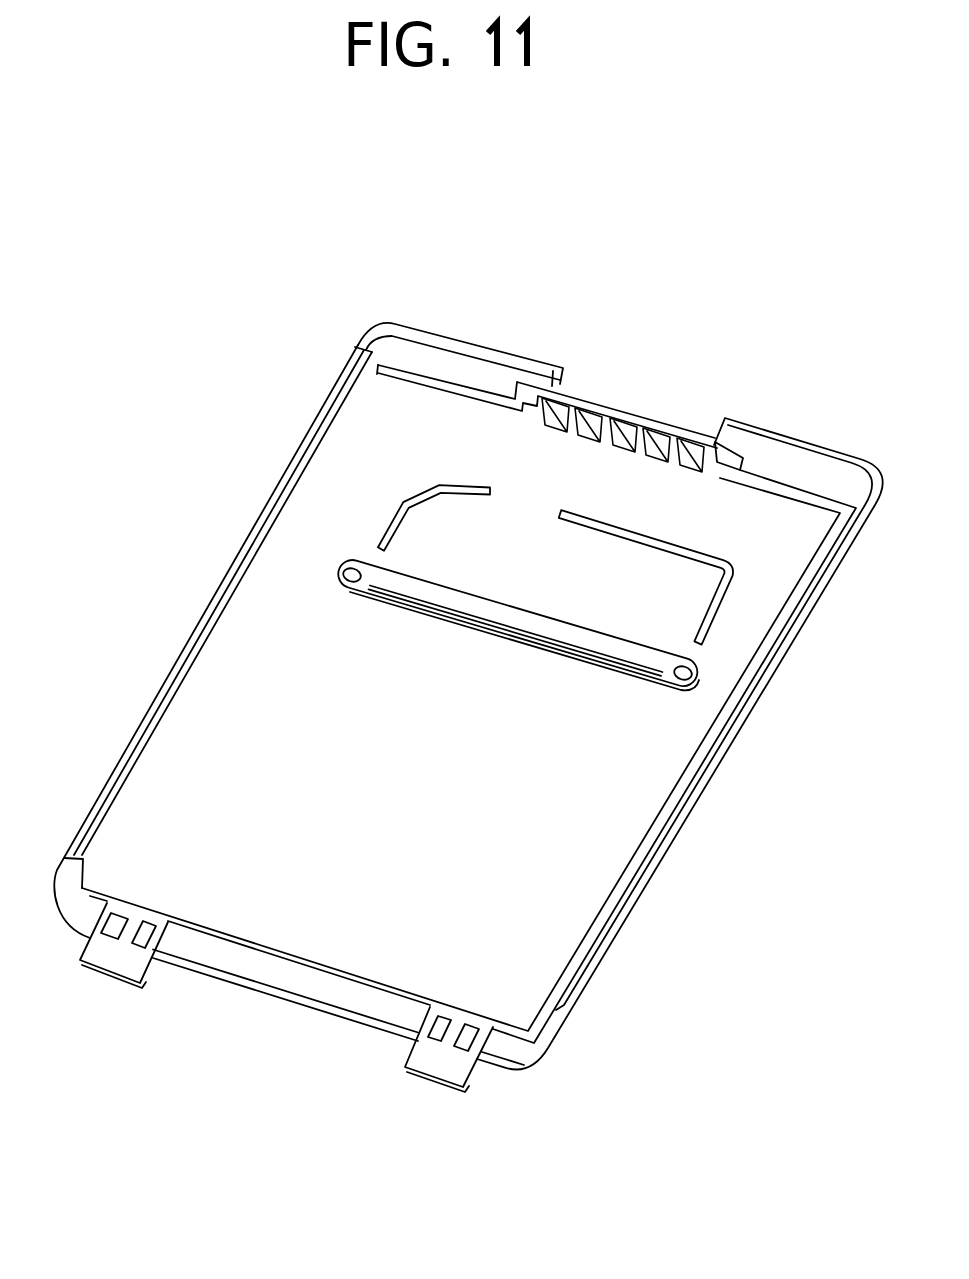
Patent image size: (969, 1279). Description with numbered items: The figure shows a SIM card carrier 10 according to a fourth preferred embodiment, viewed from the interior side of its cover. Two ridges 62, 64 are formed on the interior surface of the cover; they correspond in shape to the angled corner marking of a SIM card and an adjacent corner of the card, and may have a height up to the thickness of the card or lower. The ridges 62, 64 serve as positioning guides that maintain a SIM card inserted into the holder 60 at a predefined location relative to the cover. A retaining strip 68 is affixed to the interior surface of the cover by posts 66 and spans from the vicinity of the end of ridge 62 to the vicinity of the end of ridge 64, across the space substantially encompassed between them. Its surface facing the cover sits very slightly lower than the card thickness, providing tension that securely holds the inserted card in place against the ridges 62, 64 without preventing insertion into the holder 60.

The housing cover 10 is at (735, 810).
The holder 60 is at (522, 589).
The ridge 62 is at (423, 497).
The ridge 64 is at (703, 553).
The posts 66 is at (340, 571).
The retaining strip 68 is at (490, 648).